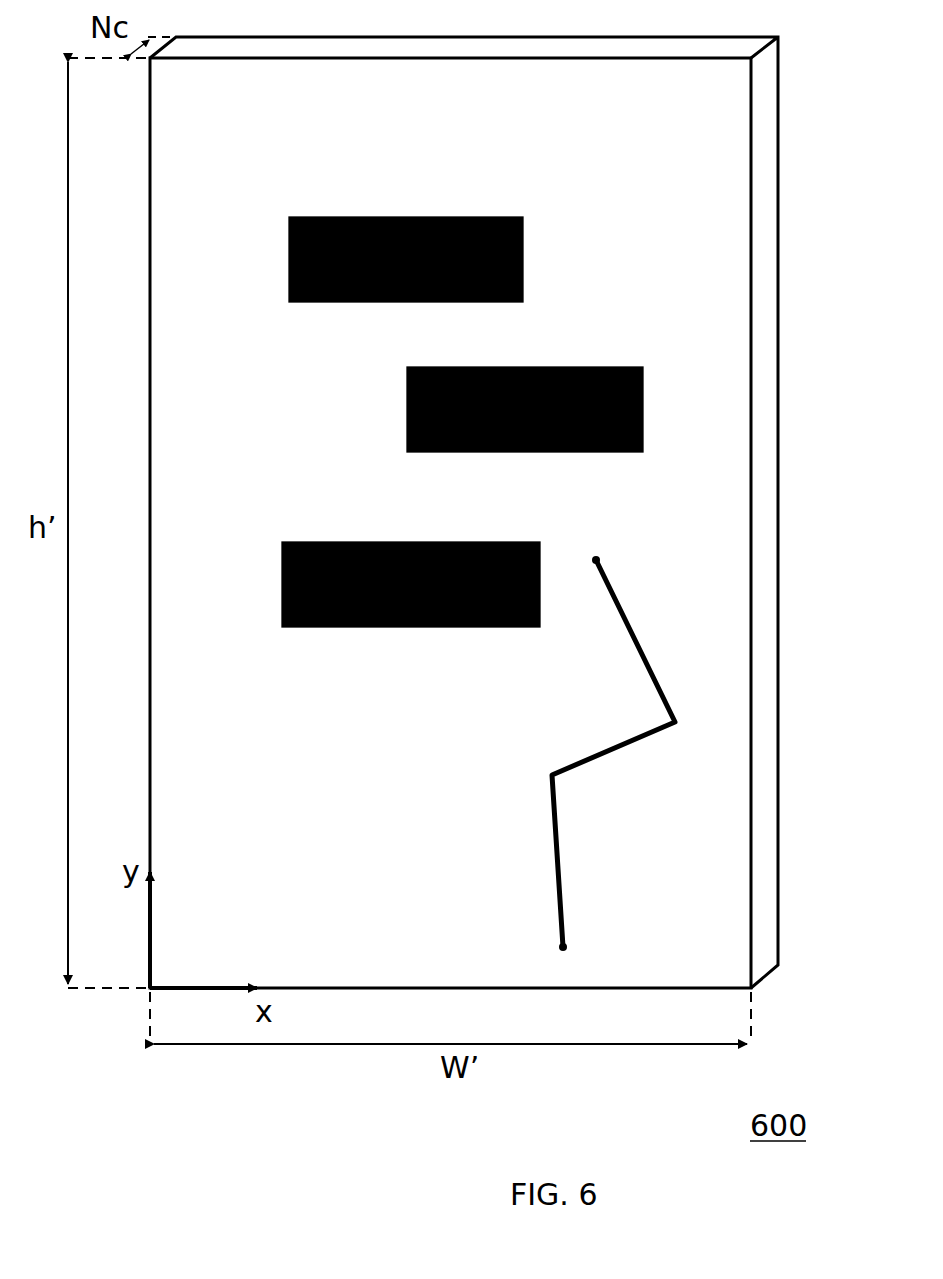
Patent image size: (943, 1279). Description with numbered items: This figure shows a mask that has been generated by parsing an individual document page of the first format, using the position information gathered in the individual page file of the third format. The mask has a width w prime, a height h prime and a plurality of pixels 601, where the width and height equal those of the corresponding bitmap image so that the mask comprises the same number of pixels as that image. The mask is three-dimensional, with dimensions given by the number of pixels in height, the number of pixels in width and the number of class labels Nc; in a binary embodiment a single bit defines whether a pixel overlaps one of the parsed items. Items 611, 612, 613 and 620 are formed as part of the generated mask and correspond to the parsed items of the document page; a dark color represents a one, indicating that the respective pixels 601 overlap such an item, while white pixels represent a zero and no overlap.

The pixels 601 is at (728, 795).
The item 611 is at (417, 217).
The item 612 is at (566, 367).
The item 613 is at (365, 542).
The item 620 is at (722, 536).